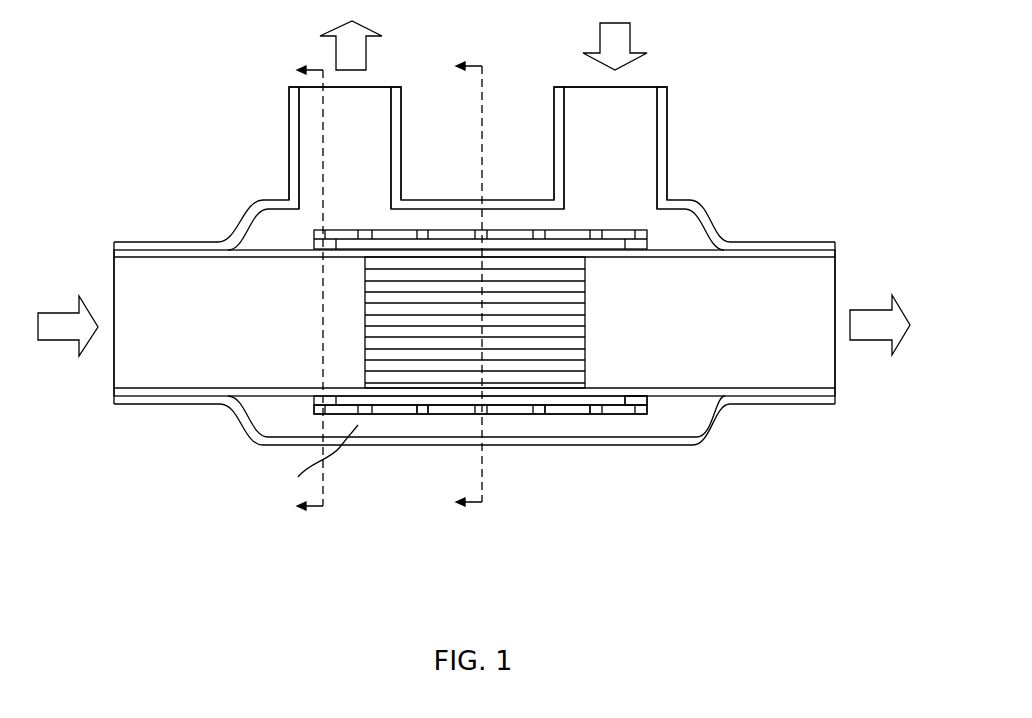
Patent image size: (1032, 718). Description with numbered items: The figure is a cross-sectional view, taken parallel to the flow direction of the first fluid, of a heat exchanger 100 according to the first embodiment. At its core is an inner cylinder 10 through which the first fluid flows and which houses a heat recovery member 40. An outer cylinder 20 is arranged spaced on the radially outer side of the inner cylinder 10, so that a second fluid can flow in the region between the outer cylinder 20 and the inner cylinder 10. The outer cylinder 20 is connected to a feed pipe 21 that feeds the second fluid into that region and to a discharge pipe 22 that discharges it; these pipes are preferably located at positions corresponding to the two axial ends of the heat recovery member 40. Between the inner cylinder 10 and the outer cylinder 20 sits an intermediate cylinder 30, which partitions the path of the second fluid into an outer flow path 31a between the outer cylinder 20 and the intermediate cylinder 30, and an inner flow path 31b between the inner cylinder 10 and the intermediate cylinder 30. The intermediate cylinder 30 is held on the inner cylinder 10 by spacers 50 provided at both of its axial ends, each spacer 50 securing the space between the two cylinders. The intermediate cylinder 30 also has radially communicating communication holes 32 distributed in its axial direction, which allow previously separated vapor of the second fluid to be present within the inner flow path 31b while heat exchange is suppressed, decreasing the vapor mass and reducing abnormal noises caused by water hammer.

The heat exchanger 100 is at (474, 319).
The inner cylinder 10 is at (687, 253).
The outer cylinder 20 is at (474, 266).
The feed pipe 21 is at (662, 170).
The discharge pipe 22 is at (293, 172).
The intermediate cylinder 30 is at (540, 410).
The outer flow path 31a is at (513, 425).
The inner flow path 31b is at (560, 402).
The communication holes 32 is at (422, 410).
The heat recovery member 40 is at (562, 302).
The spacer 50 is at (643, 400).